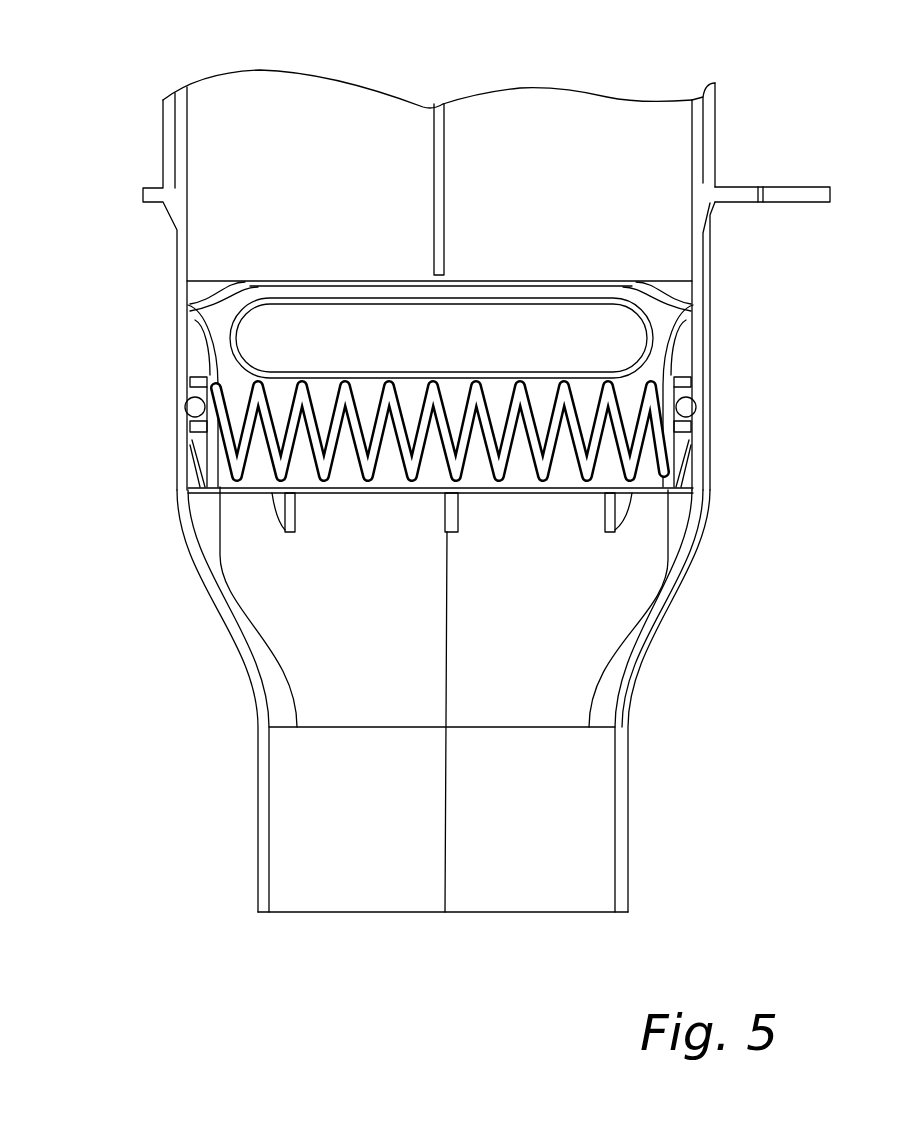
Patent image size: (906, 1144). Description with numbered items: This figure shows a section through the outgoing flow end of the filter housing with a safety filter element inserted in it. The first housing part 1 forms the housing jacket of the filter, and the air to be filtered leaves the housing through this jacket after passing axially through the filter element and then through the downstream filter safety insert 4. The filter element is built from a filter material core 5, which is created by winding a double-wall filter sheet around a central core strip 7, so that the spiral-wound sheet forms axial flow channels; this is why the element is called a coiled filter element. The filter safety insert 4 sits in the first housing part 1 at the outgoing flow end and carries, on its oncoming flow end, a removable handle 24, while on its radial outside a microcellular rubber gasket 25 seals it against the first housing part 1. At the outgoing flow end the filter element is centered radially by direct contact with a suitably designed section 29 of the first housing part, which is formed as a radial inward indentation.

The first housing part 1 is at (717, 160).
The filter safety insert 4 is at (363, 492).
The filter material core 5 is at (590, 209).
The central core strip 7 is at (444, 106).
The removable handle 24 is at (278, 292).
The microcellular rubber gasket 25 is at (690, 404).
The section of the first filter housing part 29 is at (188, 245).